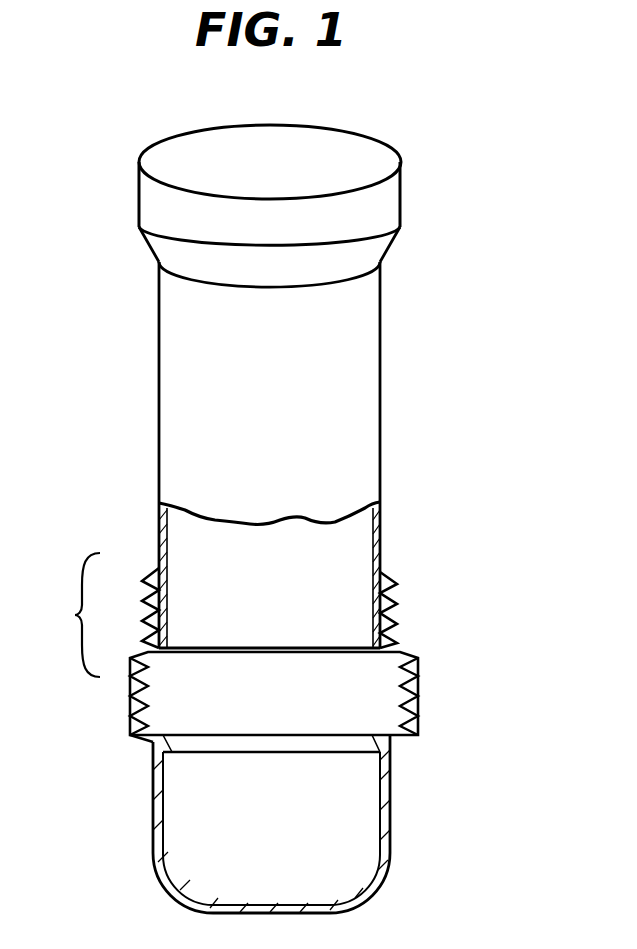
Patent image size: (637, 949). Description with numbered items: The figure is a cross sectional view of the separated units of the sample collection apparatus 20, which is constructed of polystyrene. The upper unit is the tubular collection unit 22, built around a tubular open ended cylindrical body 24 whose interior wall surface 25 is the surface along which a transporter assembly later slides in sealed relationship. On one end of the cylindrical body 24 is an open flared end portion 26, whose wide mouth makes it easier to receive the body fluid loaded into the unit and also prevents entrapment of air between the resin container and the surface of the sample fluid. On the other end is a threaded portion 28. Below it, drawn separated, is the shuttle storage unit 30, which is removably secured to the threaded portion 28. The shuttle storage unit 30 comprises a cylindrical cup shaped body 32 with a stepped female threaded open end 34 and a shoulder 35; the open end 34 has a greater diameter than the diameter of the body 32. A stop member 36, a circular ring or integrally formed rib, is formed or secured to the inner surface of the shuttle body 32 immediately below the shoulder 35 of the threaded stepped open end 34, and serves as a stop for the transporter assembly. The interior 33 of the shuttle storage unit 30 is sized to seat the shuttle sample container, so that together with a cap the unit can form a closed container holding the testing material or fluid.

The sample collection apparatus 20 is at (425, 487).
The tubular collection unit 22 is at (387, 382).
The cylindrical body 24 is at (381, 430).
The interior wall surface 25 is at (375, 540).
The flared end portion 26 is at (400, 196).
The threaded portion 28 is at (390, 605).
The shuttle storage unit 30 is at (417, 785).
The cup shaped body 32 is at (390, 853).
The interior 33 is at (322, 871).
The stepped female threaded open end 34 is at (418, 695).
The shoulder 35 is at (133, 738).
The stop member 36 is at (172, 738).